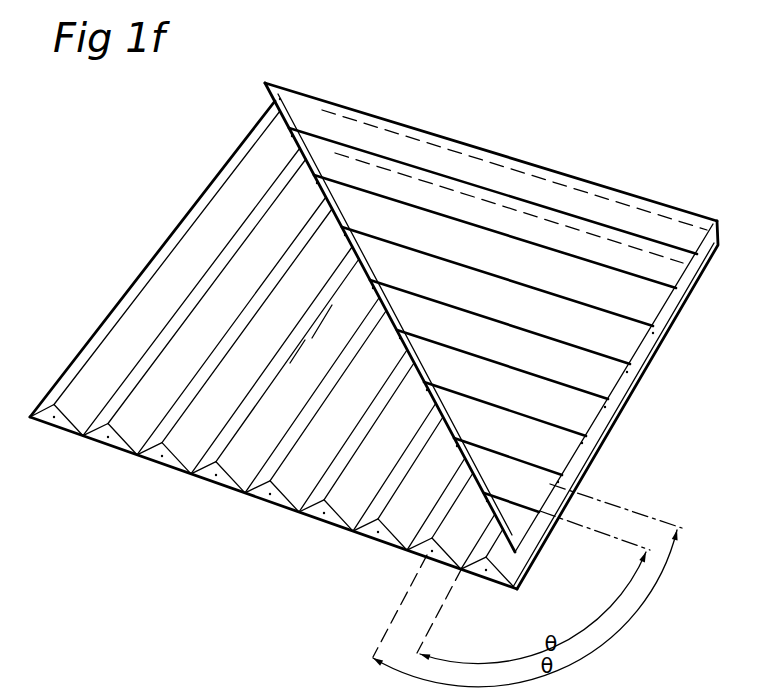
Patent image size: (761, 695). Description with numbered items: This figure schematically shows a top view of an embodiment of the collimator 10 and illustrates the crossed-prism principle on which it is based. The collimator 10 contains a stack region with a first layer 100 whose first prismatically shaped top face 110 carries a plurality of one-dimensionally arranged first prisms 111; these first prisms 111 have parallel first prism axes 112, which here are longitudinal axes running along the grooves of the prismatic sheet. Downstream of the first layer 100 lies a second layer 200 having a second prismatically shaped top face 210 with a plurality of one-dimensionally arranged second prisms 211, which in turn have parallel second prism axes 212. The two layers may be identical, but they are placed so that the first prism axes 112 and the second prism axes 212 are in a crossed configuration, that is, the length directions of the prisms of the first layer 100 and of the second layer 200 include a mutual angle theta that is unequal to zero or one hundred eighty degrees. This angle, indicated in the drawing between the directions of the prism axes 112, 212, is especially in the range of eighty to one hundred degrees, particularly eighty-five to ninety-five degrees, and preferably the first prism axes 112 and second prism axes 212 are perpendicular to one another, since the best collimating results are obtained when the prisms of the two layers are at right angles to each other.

The collimator 10 is at (217, 136).
The first layer 100 is at (78, 416).
The first prismatically shaped top face 110 is at (106, 320).
The first prisms 111 is at (300, 507).
The first prism axes 112 is at (225, 458).
The second layer 200 is at (698, 266).
The second prismatically shaped top face 210 is at (553, 420).
The second prisms 211 is at (627, 363).
The second prism axes 212 is at (632, 207).